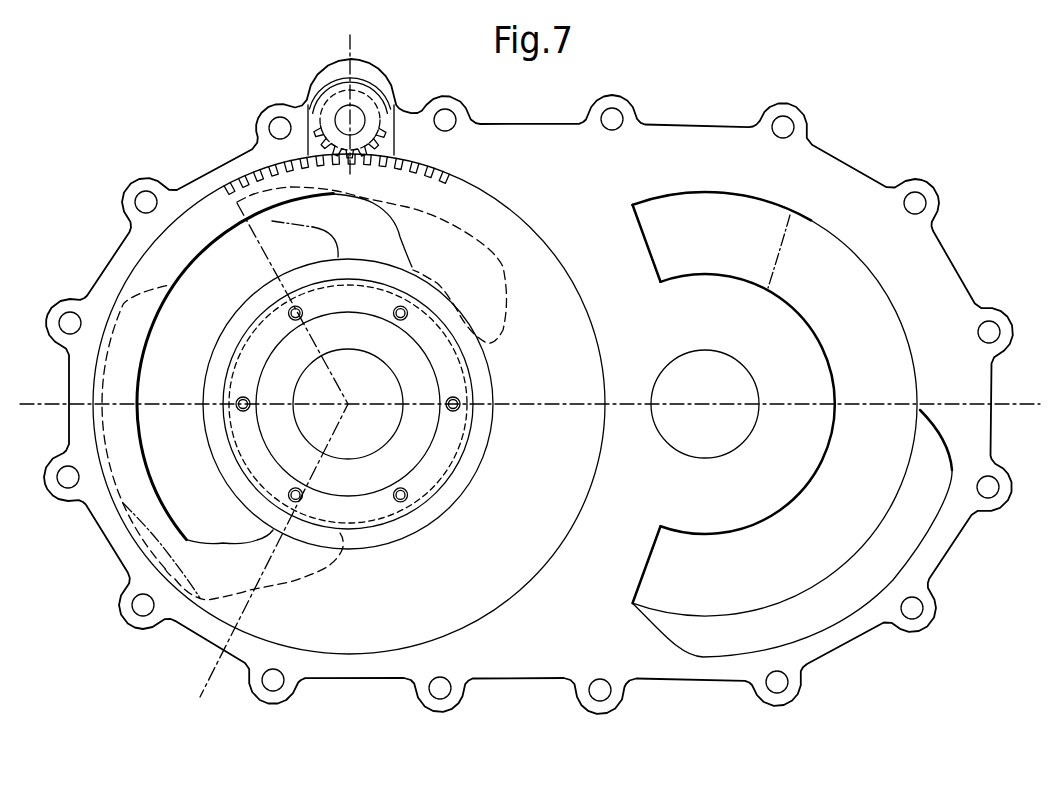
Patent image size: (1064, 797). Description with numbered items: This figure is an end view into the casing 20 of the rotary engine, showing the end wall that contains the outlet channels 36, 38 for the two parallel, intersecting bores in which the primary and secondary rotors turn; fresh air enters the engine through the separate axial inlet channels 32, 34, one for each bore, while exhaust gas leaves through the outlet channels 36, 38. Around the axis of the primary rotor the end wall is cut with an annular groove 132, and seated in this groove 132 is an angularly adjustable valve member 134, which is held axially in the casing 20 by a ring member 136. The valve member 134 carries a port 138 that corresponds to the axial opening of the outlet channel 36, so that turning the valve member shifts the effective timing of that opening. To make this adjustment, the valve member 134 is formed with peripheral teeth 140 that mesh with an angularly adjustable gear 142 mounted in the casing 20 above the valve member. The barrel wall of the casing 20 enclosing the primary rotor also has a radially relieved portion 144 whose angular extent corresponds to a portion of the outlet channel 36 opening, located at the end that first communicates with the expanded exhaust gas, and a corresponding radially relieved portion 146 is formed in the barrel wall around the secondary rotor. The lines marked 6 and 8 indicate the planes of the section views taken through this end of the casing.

The casing 20 is at (512, 140).
The axial inlet channel 32 is at (230, 268).
The axial inlet channel 34 is at (730, 220).
The outlet channel 36 is at (168, 455).
The outlet channel 38 is at (853, 287).
The groove 132 is at (483, 615).
The valve member 134 is at (222, 210).
The ring member 136 is at (440, 458).
The port 138 is at (160, 490).
The peripheral teeth 140 is at (248, 178).
The angularly adjustable gear 142 is at (320, 110).
The radially relieved portion 144 is at (120, 563).
The radially relieved portion 146 is at (830, 610).
The section line 6- 6 is at (350, 35).
The section line 8- 8 is at (20, 404).